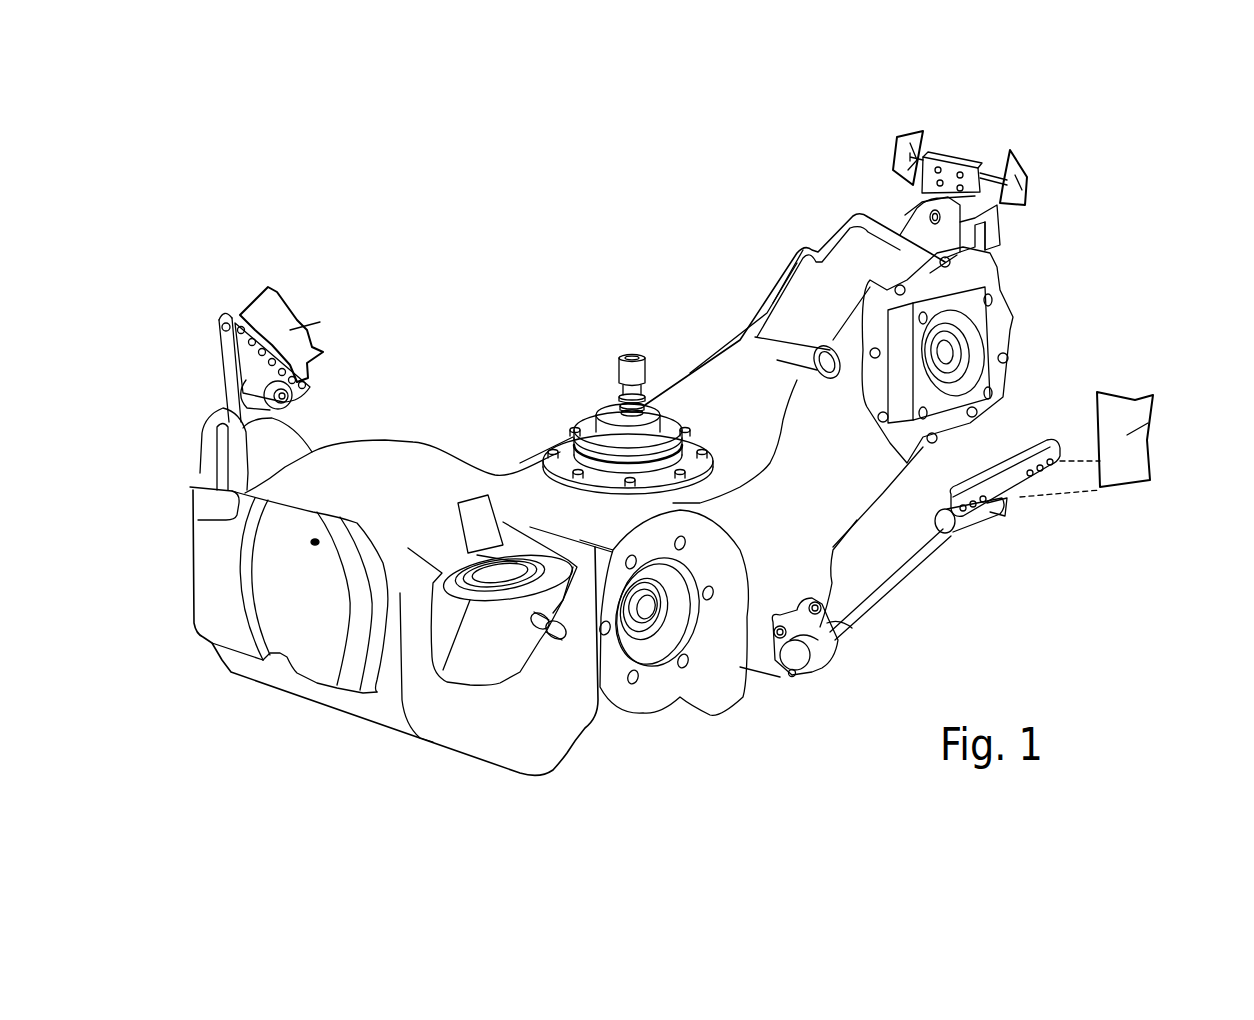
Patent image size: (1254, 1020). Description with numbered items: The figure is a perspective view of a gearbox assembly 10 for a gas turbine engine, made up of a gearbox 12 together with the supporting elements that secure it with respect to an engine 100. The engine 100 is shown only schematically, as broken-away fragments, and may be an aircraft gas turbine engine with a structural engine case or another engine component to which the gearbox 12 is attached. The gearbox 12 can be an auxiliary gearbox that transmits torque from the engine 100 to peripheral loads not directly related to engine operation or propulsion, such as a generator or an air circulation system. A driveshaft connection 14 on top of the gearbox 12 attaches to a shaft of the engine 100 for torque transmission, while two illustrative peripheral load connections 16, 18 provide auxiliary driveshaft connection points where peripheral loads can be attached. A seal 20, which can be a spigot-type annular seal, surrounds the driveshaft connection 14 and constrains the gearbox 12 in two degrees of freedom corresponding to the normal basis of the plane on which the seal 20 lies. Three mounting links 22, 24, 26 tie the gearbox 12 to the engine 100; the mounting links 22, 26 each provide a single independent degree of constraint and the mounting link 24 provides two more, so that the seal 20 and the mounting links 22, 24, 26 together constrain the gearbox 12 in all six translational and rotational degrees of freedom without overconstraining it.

The gearbox assembly 10 is at (640, 182).
The gearbox 12 is at (427, 795).
The driveshaft connection 14 is at (619, 352).
The peripheral load connection 16 is at (679, 682).
The peripheral load connection 18 is at (945, 357).
The seal 20 is at (570, 432).
The mounting link 22 is at (232, 318).
The mounting link 24 is at (960, 158).
The mounting link 26 is at (1020, 507).
The engine 100 is at (285, 322).